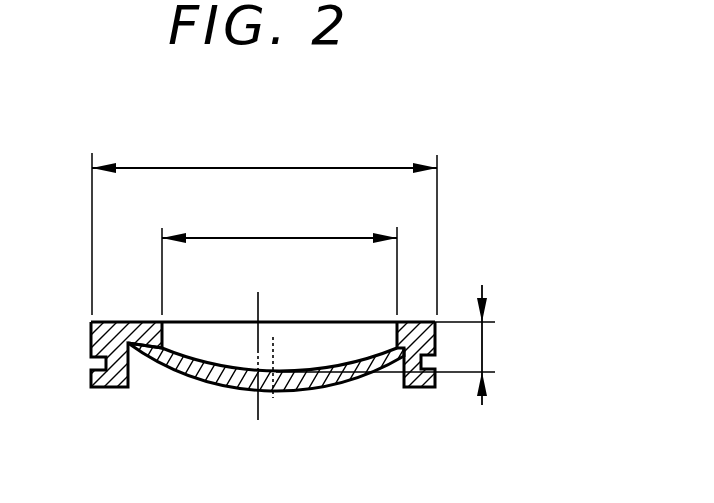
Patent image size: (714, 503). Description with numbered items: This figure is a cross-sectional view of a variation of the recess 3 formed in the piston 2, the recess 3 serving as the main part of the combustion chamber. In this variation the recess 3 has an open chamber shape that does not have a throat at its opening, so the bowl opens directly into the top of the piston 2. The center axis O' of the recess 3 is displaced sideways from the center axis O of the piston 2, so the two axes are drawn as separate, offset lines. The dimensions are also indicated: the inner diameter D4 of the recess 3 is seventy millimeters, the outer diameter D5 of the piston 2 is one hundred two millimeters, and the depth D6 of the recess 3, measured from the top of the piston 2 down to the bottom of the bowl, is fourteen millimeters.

The piston 2 is at (122, 381).
The recess 3 is at (302, 370).
The center axis of the piston O is at (231, 374).
The center axis of the recess O' is at (290, 397).
The inner diameter of the recess D4 is at (279, 260).
The outer diameter of the piston D5 is at (264, 224).
The depth D6 is at (483, 352).